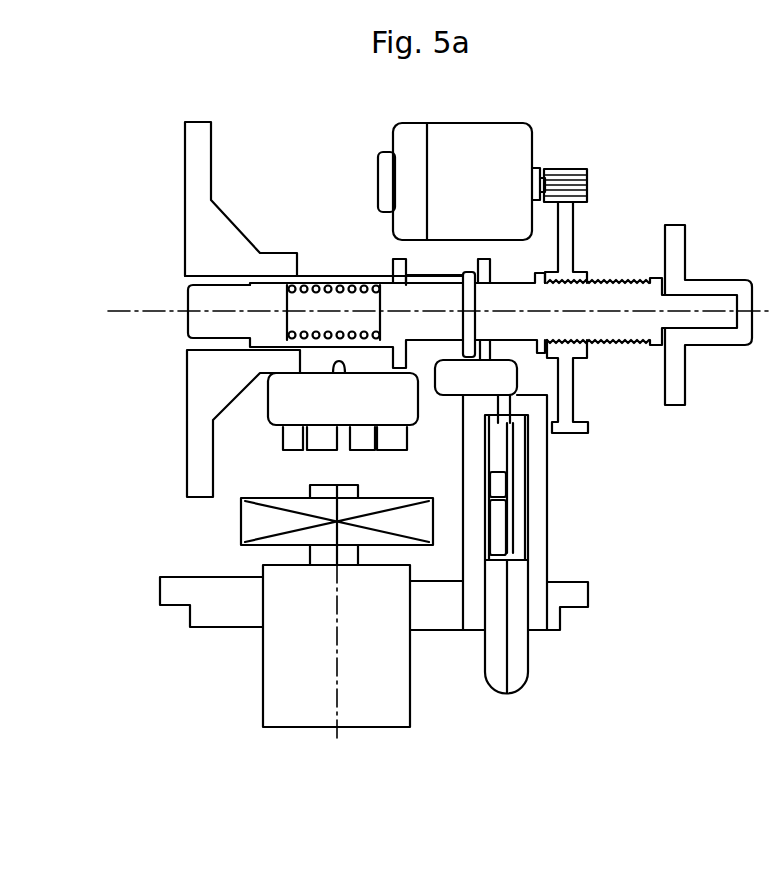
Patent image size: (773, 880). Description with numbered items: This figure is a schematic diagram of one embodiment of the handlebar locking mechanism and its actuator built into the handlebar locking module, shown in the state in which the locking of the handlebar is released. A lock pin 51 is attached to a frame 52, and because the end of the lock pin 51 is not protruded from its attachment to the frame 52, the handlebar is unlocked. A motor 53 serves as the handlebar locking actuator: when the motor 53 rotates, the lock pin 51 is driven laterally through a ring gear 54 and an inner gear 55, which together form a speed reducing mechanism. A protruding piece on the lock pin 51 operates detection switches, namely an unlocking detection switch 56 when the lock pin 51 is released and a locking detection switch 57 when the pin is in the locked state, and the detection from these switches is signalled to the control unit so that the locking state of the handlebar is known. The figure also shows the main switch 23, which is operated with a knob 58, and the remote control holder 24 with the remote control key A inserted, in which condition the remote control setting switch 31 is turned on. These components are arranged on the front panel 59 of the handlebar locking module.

The lock pin 51 is at (198, 316).
The frame 52 is at (203, 205).
The motor 53 is at (463, 135).
The ring gear 54 is at (568, 233).
The inner gear 55 is at (627, 336).
The remote control setting switch 31 is at (515, 375).
The unlocking detection switch 56 is at (413, 428).
The locking detection switch 57 is at (270, 425).
The knob 58 is at (287, 670).
The front panel 59 is at (440, 635).
The remote control holder 24 is at (533, 573).
The remote control key A is at (518, 668).
The main switch 23 is at (317, 728).